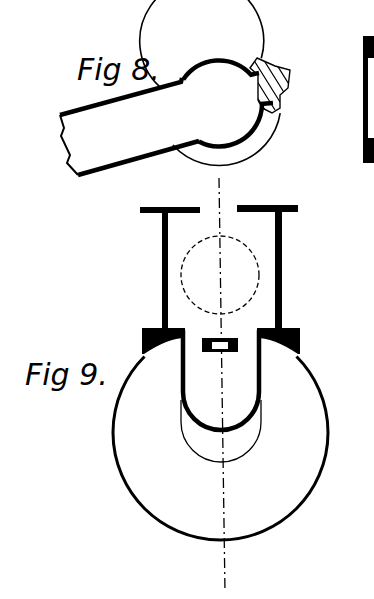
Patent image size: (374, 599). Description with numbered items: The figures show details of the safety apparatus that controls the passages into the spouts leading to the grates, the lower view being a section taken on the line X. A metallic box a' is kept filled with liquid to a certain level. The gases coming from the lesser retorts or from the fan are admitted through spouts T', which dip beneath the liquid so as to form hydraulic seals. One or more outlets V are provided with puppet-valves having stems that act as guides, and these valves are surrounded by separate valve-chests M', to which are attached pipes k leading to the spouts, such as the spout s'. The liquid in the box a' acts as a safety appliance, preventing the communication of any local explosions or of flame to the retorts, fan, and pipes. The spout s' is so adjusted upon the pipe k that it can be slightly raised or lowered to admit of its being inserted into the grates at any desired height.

In FIG. 8, the spout s' is at (129, 126).
In FIG. 9, the section line X is at (239, 385).
In FIG. 9, the valve-chest M' is at (220, 279).
In FIG. 9, the pipe k is at (220, 275).
In FIG. 9, the outlet V is at (221, 380).
In FIG. 9, the spout T' is at (221, 424).
In FIG. 9, the metallic box a' is at (220, 449).